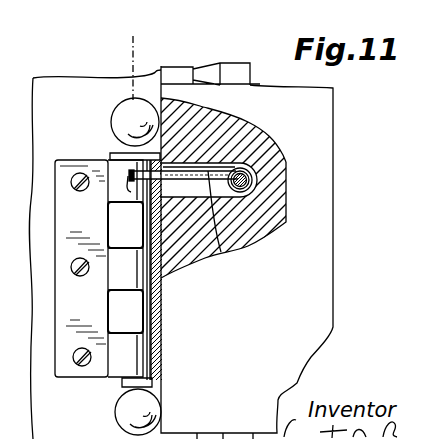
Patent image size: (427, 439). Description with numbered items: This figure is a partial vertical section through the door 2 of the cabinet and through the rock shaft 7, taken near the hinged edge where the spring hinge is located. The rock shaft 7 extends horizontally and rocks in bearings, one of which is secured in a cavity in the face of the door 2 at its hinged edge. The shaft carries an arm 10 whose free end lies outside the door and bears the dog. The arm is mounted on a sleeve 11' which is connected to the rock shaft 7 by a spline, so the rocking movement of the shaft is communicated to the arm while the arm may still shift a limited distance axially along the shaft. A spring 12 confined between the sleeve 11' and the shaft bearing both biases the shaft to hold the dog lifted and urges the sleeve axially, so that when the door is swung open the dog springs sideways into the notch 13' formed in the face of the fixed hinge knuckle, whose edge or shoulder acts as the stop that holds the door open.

The door 2 is at (213, 251).
The rock shaft 7 is at (257, 181).
The arm 10 is at (125, 42).
The sleeve 11' is at (224, 192).
The spring 12 is at (281, 150).
The notch 13' is at (106, 159).